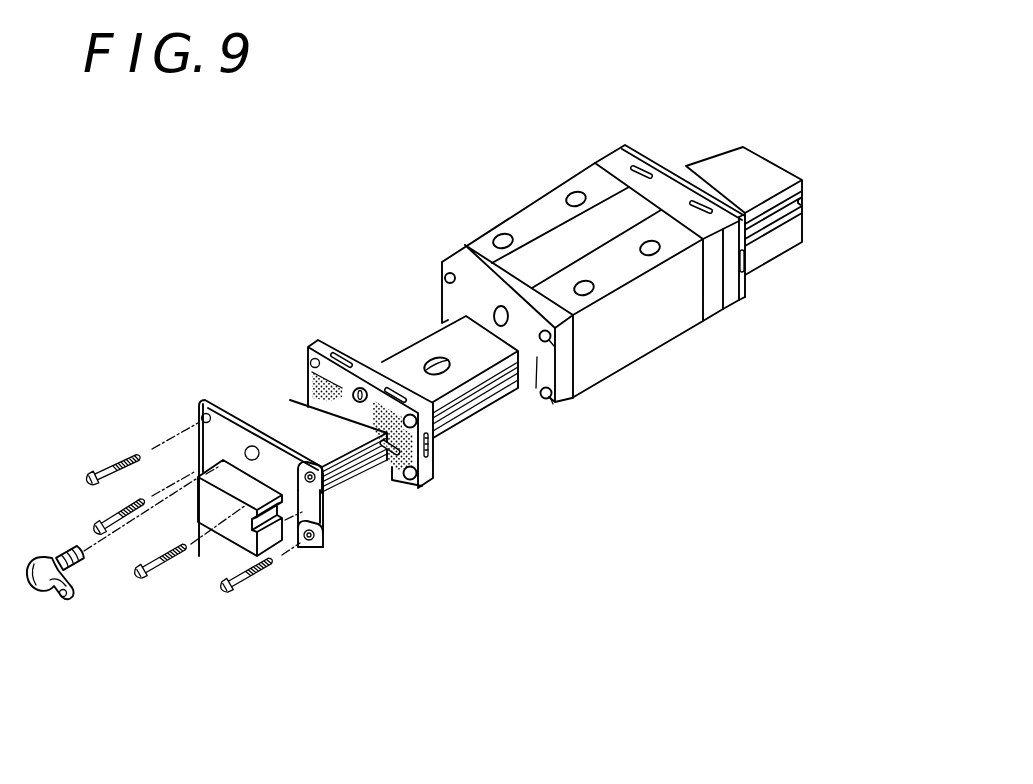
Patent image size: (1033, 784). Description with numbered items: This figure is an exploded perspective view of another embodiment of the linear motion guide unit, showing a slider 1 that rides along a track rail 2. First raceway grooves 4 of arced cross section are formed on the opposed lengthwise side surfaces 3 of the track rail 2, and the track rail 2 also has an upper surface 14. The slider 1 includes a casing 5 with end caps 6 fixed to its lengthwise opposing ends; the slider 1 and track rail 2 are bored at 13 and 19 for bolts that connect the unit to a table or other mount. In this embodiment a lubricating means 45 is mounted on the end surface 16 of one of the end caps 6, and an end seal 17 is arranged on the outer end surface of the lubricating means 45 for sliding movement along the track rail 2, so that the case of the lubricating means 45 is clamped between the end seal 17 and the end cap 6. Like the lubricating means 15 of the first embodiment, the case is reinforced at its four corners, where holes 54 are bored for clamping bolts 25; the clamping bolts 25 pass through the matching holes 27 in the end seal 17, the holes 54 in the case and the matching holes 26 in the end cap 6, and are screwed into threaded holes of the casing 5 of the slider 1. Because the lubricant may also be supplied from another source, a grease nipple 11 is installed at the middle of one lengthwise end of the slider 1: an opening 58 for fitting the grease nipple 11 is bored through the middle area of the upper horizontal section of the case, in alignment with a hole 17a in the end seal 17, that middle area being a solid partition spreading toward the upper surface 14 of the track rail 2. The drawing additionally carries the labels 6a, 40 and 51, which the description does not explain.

The slider 1 is at (647, 365).
The track rail 2 is at (410, 363).
The lengthwise side surfaces 3 is at (193, 490).
The first raceway grooves 4 is at (343, 477).
The casing 5 is at (552, 213).
The end caps 6 is at (605, 168).
The grease passage hole 6a is at (500, 308).
The grease nipple 11 is at (38, 590).
The bolt hole 13 is at (437, 365).
The upper surface of the track rail 14 is at (737, 182).
The lubricating means 15 is at (735, 306).
The end surface of the end cap 16 is at (536, 388).
The end seal 17 is at (746, 290).
The hole in the end seal 17a is at (252, 446).
The bolt hole 19 is at (505, 237).
The clamping bolts 25 is at (115, 466).
The matching holes in the end cap 26 is at (445, 275).
The matching holes in the end seal 27 is at (201, 413).
The lubricating member 40 is at (317, 387).
The lubricating means 45 is at (427, 496).
The seal plate 51 is at (320, 342).
The holes 54 is at (312, 363).
The opening 58 is at (357, 388).